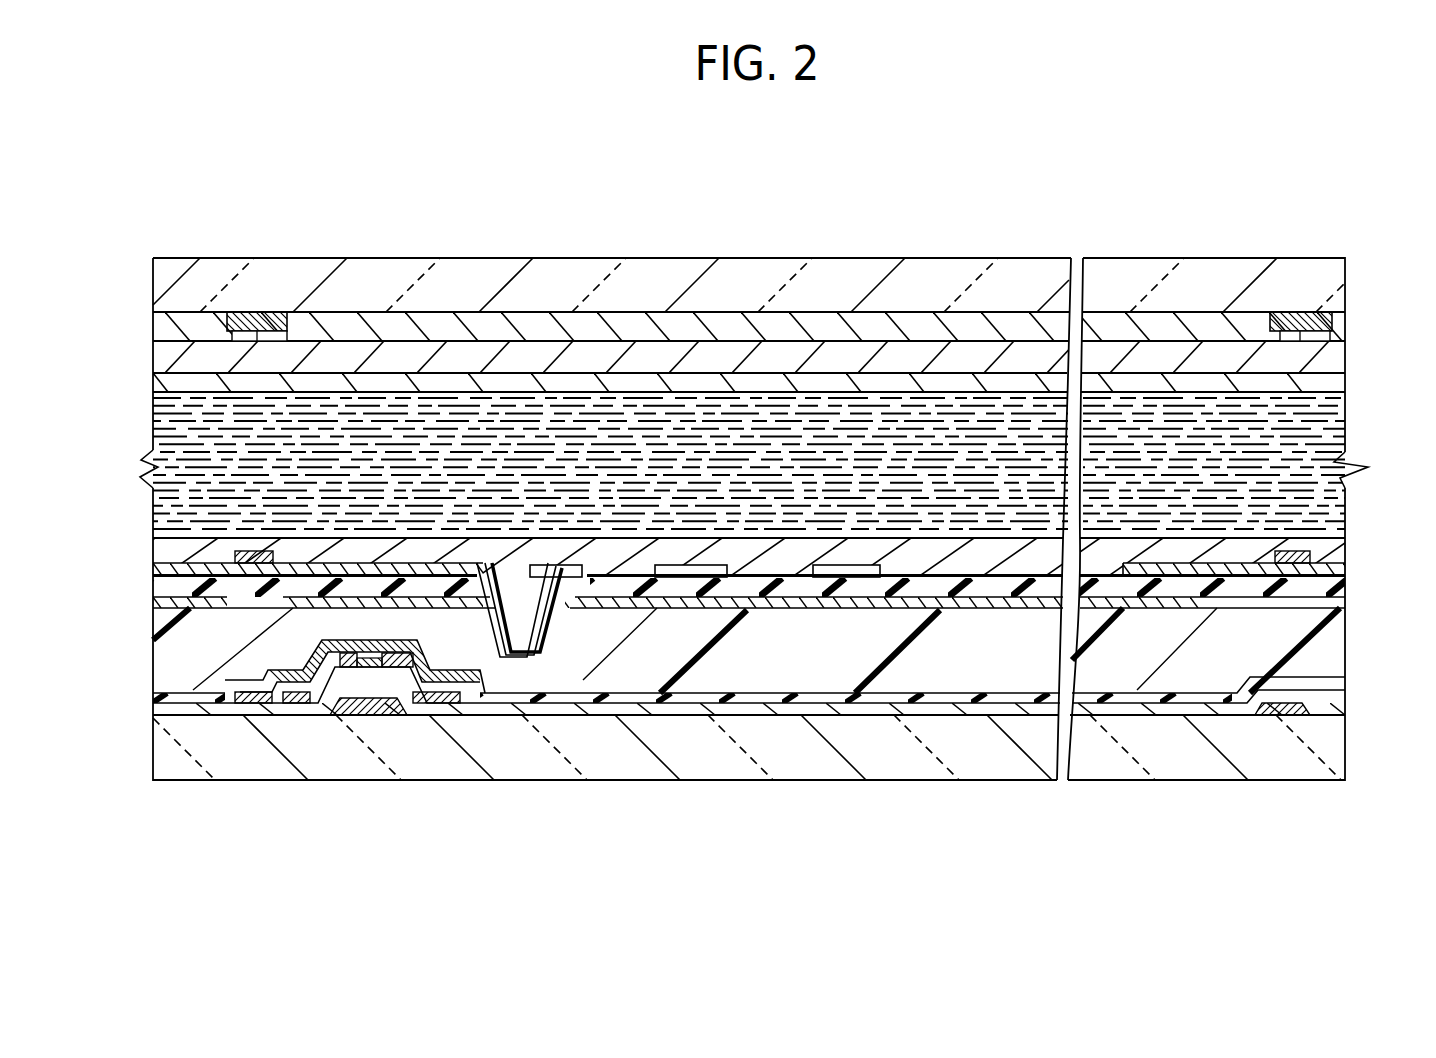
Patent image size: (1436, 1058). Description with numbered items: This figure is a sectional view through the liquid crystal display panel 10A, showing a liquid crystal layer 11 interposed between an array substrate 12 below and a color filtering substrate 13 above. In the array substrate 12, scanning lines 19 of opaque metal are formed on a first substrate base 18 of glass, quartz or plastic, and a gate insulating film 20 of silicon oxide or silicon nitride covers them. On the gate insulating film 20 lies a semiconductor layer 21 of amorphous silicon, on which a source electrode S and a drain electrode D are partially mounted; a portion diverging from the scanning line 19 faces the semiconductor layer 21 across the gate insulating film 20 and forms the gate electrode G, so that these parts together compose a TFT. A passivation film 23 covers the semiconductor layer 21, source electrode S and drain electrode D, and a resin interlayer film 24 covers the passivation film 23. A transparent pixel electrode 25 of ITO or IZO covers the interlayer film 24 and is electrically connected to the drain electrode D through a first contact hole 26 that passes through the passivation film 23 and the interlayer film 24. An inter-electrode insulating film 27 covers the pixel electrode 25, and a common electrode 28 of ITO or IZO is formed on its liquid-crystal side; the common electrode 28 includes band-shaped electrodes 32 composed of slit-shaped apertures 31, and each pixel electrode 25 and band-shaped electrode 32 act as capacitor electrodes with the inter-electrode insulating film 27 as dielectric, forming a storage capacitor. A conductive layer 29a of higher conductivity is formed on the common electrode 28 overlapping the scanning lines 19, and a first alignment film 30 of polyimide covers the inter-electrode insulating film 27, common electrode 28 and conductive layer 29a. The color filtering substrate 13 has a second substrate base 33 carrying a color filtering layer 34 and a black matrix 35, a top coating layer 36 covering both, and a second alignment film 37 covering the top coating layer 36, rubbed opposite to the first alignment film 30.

The liquid crystal display panel 10A is at (605, 145).
The liquid crystal layer 11 is at (1368, 392).
The array substrate 12 is at (1368, 537).
The color filtering substrate 13 is at (1368, 258).
The first substrate base 18 is at (1003, 763).
The scanning line 19 is at (1306, 713).
The gate insulating film 20 is at (703, 712).
The semiconductor layer 21 is at (292, 692).
The passivation film 23 is at (778, 700).
The interlayer film 24 is at (457, 655).
The pixel electrode 25 is at (893, 600).
The first contact hole 26 is at (512, 600).
The inter-electrode insulating film 27 is at (153, 583).
The common electrode 28 is at (562, 572).
The conductive layer 29a is at (230, 573).
The first alignment film 30 is at (612, 572).
The slit-shaped aperture 31 is at (923, 573).
The band-shaped electrode 32 is at (842, 572).
The second substrate base 33 is at (675, 283).
The color filtering layer 34 is at (490, 322).
The black matrix 35 is at (258, 312).
The top coating layer 36 is at (790, 355).
The second alignment film 37 is at (892, 383).
The source electrode S is at (313, 705).
The gate electrode G is at (376, 716).
The drain electrode D is at (442, 705).
The thin film transistor TFT is at (292, 838).